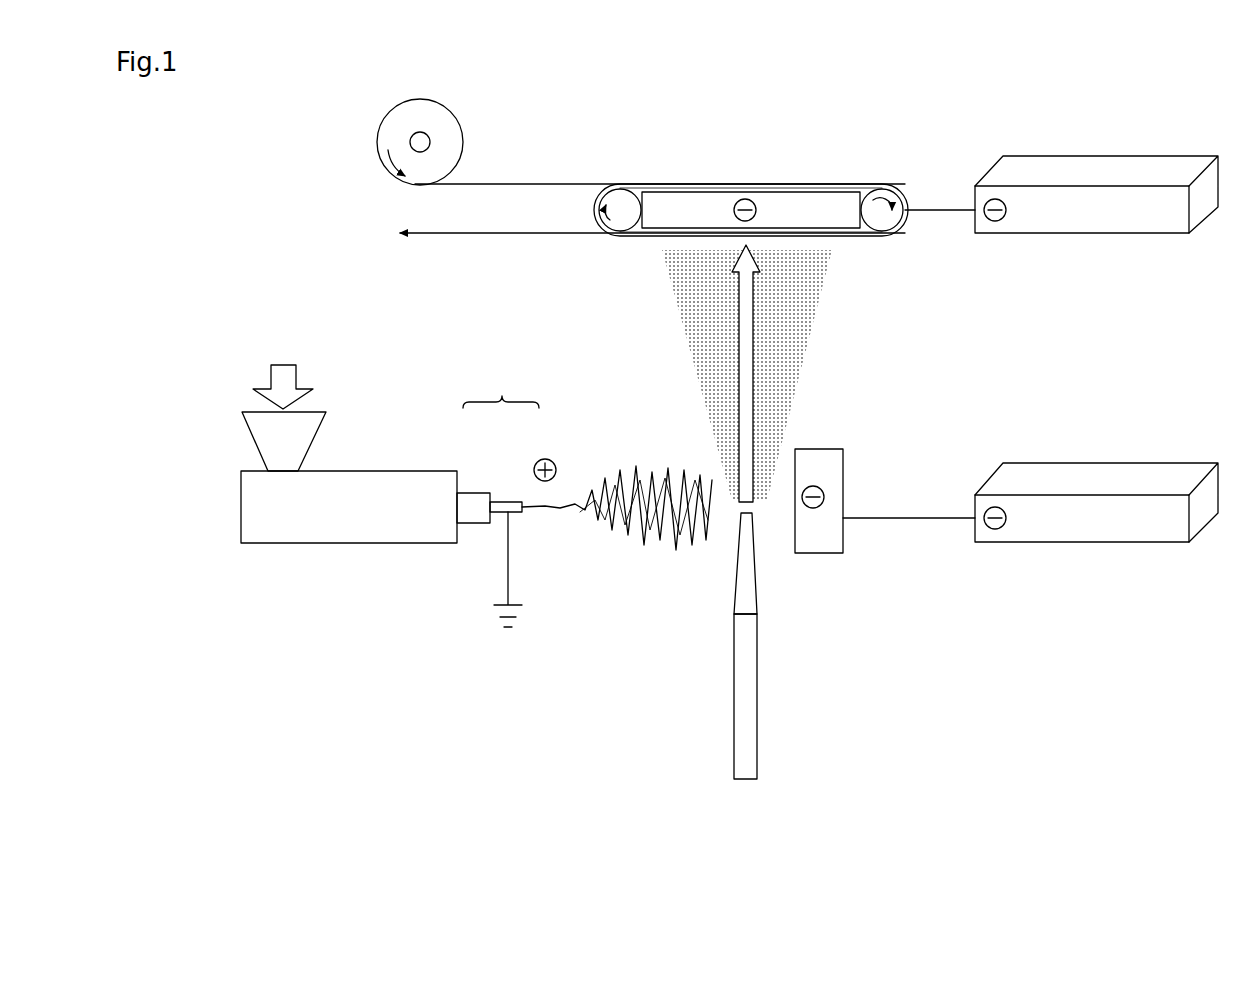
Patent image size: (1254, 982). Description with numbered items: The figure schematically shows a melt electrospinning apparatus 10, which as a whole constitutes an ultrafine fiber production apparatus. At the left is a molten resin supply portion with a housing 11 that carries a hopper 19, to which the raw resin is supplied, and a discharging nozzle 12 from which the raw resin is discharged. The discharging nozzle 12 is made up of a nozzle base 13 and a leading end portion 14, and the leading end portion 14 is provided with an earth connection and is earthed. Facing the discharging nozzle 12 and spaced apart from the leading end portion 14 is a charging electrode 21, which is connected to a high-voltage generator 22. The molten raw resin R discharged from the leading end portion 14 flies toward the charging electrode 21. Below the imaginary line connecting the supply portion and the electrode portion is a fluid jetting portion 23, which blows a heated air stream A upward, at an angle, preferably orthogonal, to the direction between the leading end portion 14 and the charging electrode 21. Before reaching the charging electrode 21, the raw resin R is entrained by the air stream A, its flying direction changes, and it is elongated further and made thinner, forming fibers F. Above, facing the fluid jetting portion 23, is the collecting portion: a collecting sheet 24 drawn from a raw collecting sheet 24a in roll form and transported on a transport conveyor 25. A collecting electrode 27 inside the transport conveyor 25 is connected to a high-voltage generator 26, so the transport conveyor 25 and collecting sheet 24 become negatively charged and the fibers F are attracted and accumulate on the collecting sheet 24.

The melt electrospinning apparatus 10 is at (600, 408).
The housing 11 is at (395, 545).
The discharging nozzle 12 is at (501, 385).
The nozzle base 13 is at (470, 545).
The leading end portion 14 is at (508, 500).
The hopper 19 is at (252, 445).
The charging electrode 21 is at (845, 478).
The high-voltage generator 22 is at (1072, 477).
The fluid jetting portion 23 is at (757, 710).
The collecting sheet 24 is at (543, 183).
The raw collecting sheet 24a is at (432, 113).
The transport conveyor 25 is at (755, 176).
The high-voltage generator 26 is at (1095, 168).
The collecting electrode 27 is at (815, 190).
The air stream A is at (748, 412).
The fibers F is at (790, 338).
The raw resin R is at (627, 540).